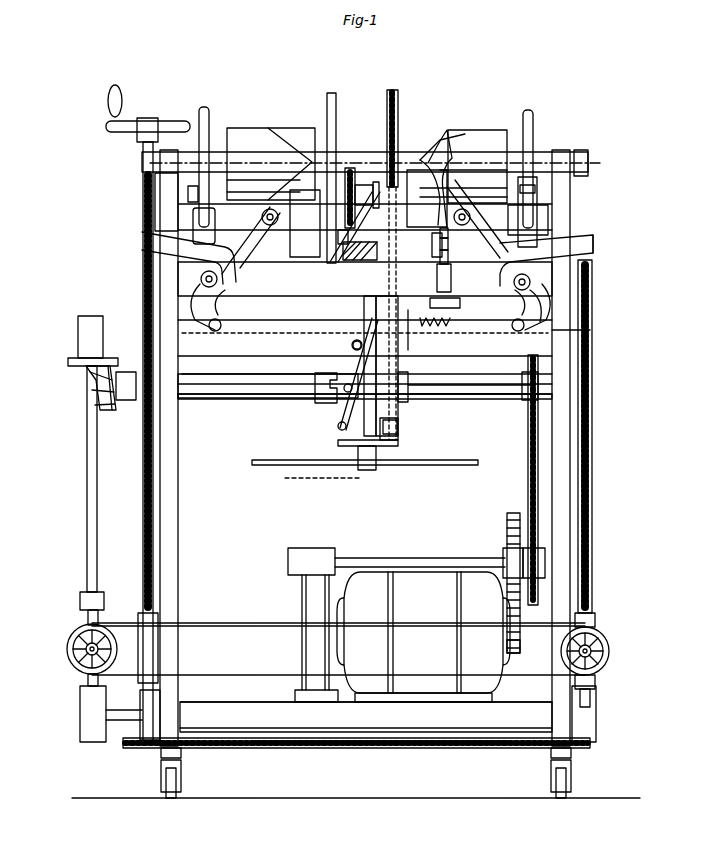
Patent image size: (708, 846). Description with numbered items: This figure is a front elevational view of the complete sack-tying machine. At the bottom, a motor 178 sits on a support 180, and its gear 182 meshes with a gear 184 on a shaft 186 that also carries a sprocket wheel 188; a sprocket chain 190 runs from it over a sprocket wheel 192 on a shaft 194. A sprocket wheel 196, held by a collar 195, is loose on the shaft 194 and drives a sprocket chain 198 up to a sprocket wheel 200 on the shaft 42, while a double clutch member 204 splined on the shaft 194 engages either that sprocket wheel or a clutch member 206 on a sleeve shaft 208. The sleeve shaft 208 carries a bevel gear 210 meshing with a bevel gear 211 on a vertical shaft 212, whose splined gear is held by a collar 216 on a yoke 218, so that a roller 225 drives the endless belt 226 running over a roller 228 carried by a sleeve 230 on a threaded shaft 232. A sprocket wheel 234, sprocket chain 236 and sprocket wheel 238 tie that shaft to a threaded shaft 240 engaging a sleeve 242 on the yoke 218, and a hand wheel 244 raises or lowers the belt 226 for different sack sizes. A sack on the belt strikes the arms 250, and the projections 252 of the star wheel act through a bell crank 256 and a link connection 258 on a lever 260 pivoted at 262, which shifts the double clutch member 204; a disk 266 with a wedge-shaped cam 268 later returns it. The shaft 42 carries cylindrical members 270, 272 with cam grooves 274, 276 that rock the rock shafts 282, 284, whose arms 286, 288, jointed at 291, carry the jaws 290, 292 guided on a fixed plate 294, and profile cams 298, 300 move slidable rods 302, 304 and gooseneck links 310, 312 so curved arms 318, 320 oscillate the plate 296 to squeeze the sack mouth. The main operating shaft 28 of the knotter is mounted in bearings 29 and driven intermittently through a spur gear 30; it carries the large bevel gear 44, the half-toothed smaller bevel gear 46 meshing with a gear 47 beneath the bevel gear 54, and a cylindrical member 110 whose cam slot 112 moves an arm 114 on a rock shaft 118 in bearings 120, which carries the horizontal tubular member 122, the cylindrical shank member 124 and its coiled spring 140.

The main operating shaft 28 is at (362, 186).
The bearings 29 is at (283, 215).
The spur gear 30 is at (328, 239).
The shaft 42 is at (588, 166).
The large bevel gear 44 is at (346, 170).
The smaller bevel gear 46 is at (376, 182).
The gear 47 is at (432, 245).
The bevel gear 54 is at (356, 240).
The cylindrical member 110 is at (422, 165).
The cam slot 112 is at (459, 236).
The arm 114 is at (459, 247).
The rock shaft 118 is at (451, 286).
The bearings 120 is at (446, 260).
The horizontal tubular member 122 is at (452, 306).
The cylindrical shank member 124 is at (418, 331).
The coiled spring 140 is at (442, 328).
The motor 178 is at (408, 690).
The support 180 is at (446, 728).
The gear 182 is at (514, 653).
The gear 184 is at (507, 525).
The shaft 186 is at (422, 558).
The sprocket wheel 188 is at (536, 584).
The sprocket chain 190 is at (538, 490).
The sprocket wheel 192 is at (538, 364).
The shaft 194 is at (492, 392).
The collar 195 is at (408, 378).
The sprocket wheel 196 is at (400, 411).
The sprocket chain 198 is at (397, 302).
The sprocket wheel 200 is at (399, 108).
The double clutch member 204 is at (329, 378).
The clutch member 206 is at (312, 378).
The sleeve shaft 208 is at (218, 390).
The bevel gear 210 is at (102, 397).
The bevel gear 211 is at (72, 366).
The vertical shaft 212 is at (90, 450).
The collar 216 is at (82, 598).
The yoke 218 is at (90, 615).
The roller 225 is at (68, 652).
The endless belt 226 is at (222, 610).
The roller 228 is at (608, 645).
The sleeve 230 is at (592, 618).
The threaded shaft 232 is at (592, 516).
The sprocket wheel 234 is at (600, 746).
The sprocket chain 236 is at (310, 748).
The sprocket wheel 238 is at (134, 745).
The threaded shaft 240 is at (152, 530).
The sleeve 242 is at (158, 655).
The hand wheel 244 is at (135, 130).
The radially extending arms 250 is at (278, 458).
The projections 252 is at (338, 443).
The bell crank 256 is at (400, 429).
The link connection 258 is at (340, 428).
The lever 260 is at (340, 410).
The pivot 262 is at (352, 342).
The disk 266 is at (329, 94).
The wedge-shaped cam 268 is at (343, 248).
The cylindrical member 270 is at (242, 136).
The cylindrical member 272 is at (492, 138).
The cam groove 274 is at (276, 130).
The cam groove 276 is at (430, 140).
The rock shaft 282 is at (262, 217).
The rock shaft 284 is at (471, 217).
The arm 286 is at (245, 252).
The arm 288 is at (514, 305).
The jaw 290 is at (222, 330).
The pivot 291 is at (150, 262).
The jaw 292 is at (578, 334).
The fixed plate 294 is at (195, 300).
The plate 296 is at (200, 278).
The profile cam 298 is at (204, 108).
The profile cam 300 is at (534, 115).
The slidable rod 302 is at (190, 193).
The slidable rod 304 is at (537, 196).
The gooseneck link 310 is at (205, 228).
The gooseneck link 312 is at (535, 230).
The curved arm 318 is at (150, 238).
The curved arm 320 is at (580, 245).